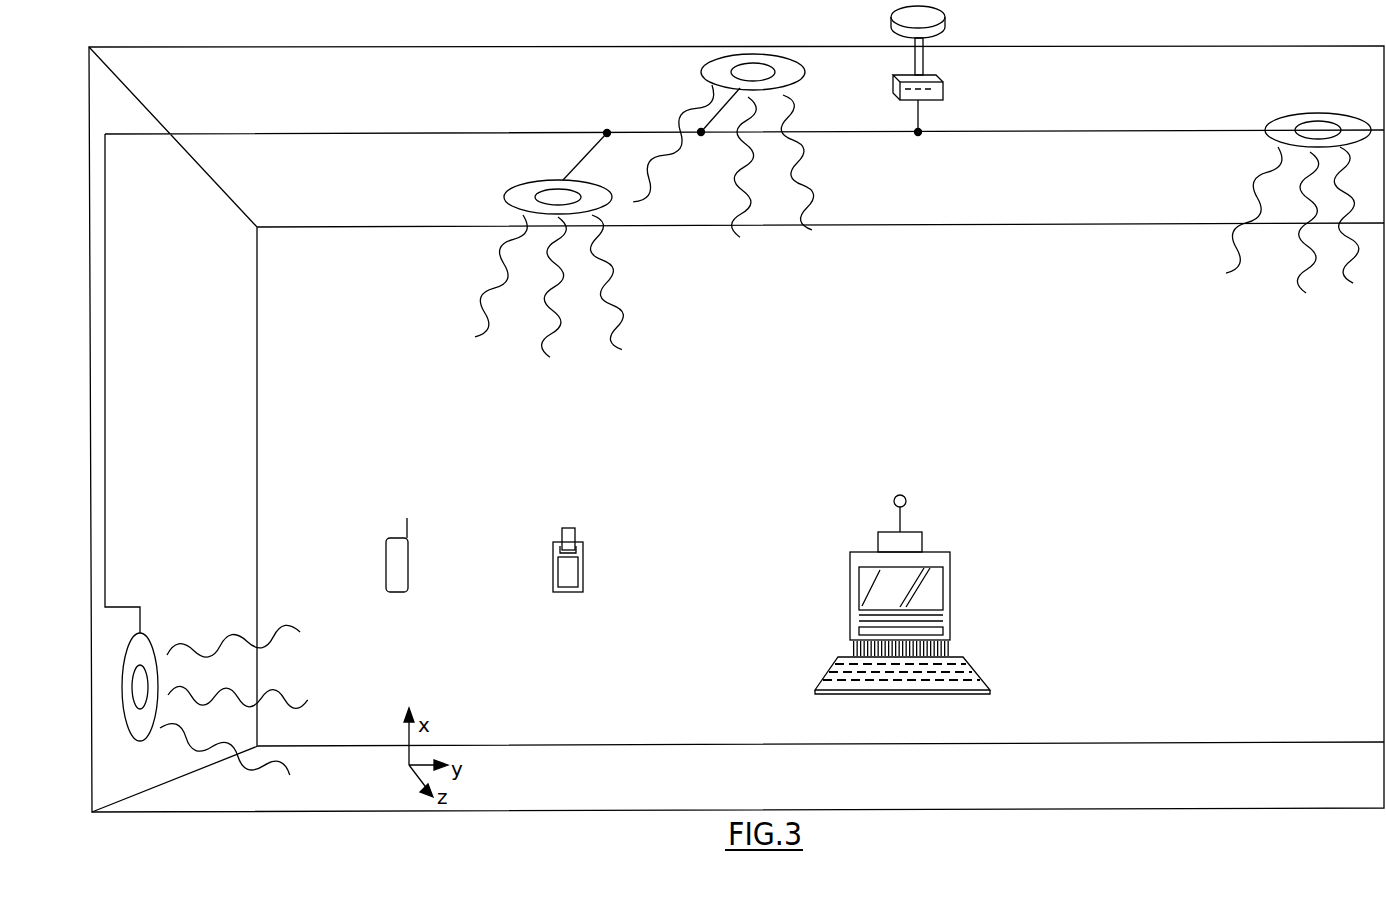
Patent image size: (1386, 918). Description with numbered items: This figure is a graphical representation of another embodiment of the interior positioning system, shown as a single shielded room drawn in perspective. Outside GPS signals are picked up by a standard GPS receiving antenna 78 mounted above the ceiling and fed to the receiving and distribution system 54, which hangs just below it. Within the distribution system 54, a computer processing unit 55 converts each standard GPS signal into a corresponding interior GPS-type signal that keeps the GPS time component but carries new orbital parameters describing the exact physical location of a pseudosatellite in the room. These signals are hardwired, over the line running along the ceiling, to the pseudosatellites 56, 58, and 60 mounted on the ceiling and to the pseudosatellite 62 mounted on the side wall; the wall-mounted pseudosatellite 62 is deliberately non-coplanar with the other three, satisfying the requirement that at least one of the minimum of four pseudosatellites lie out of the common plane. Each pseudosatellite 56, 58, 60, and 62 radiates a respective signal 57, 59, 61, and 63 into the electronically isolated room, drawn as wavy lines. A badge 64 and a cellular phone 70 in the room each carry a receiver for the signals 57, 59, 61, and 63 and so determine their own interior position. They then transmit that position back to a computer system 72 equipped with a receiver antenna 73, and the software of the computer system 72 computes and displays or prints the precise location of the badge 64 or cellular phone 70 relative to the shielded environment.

The receiving and distribution system 54 is at (943, 82).
The computer processing unit 55 is at (943, 93).
The pseudosatellite 56 is at (533, 185).
The signal 57 is at (548, 345).
The pseudosatellite 58 is at (1320, 113).
The signal 59 is at (1315, 280).
The pseudosatellite 60 is at (700, 80).
The signal 61 is at (790, 100).
The pseudosatellite 62 is at (140, 745).
The signal 63 is at (253, 632).
The badge 64 is at (585, 548).
The cellular phone 70 is at (410, 568).
The computer system 72 is at (953, 588).
The receiver antenna 73 is at (908, 536).
The GPS receiving antenna 78 is at (891, 20).